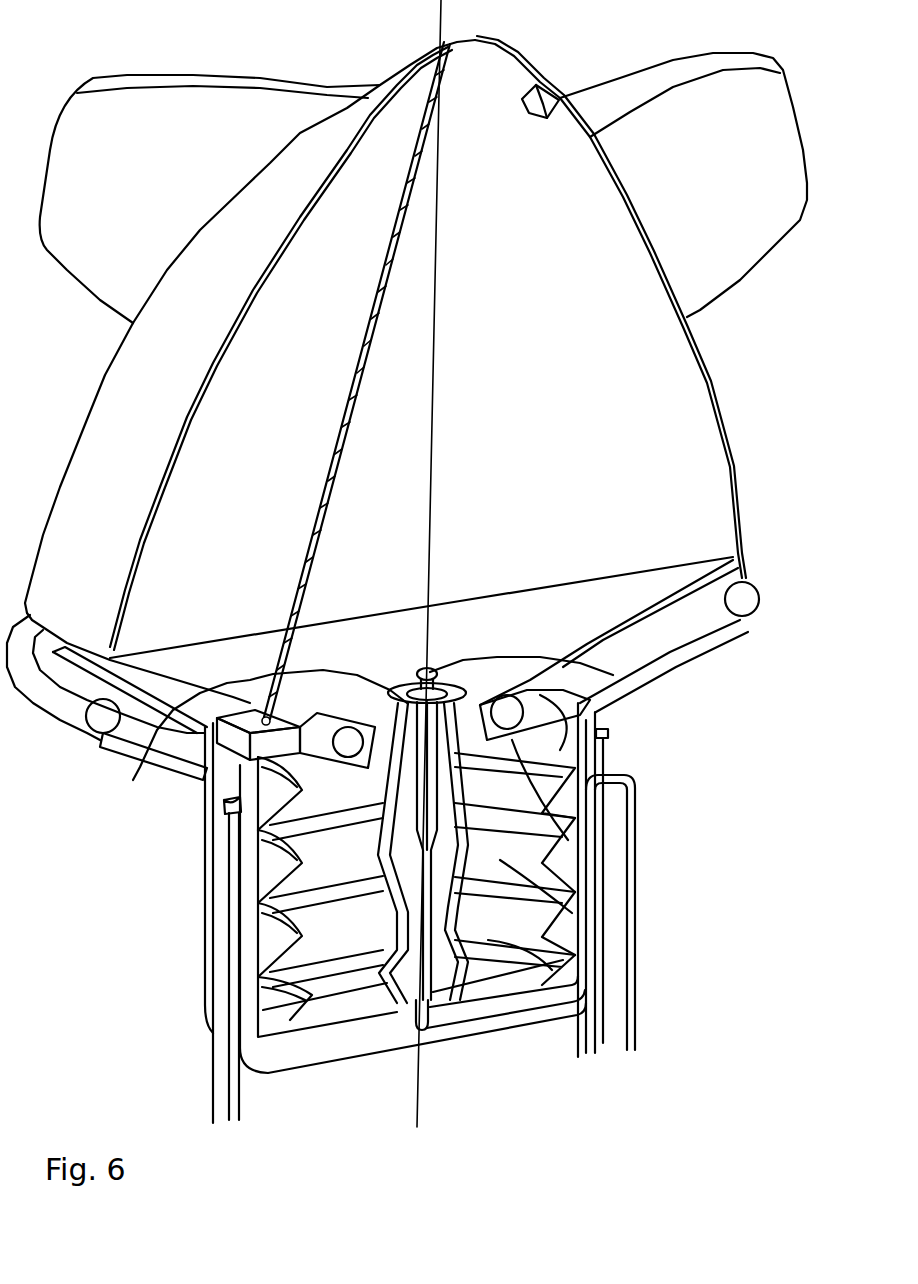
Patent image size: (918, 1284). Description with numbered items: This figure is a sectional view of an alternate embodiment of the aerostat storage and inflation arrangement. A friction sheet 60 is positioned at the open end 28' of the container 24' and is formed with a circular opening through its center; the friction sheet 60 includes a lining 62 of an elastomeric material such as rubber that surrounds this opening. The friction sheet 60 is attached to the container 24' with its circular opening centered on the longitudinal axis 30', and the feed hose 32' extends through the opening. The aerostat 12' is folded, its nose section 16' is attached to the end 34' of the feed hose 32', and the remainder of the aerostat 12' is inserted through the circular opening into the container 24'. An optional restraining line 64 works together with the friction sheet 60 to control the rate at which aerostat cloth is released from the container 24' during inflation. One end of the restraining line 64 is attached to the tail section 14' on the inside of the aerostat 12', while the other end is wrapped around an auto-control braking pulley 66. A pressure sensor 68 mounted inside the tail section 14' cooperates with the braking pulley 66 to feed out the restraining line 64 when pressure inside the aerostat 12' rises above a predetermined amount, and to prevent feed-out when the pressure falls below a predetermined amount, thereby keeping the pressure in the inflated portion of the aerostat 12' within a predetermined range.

The aerostat 12' is at (392, 356).
The tail section 14' is at (210, 165).
The nose section 16' is at (191, 711).
The container 24' is at (173, 923).
The open end 28' is at (614, 838).
The longitudinal axis 30' is at (383, 563).
The feed hose 32' is at (488, 906).
The end 34' is at (435, 718).
The friction sheet 60 is at (525, 745).
The lining 62 is at (508, 715).
The restraining line 64 is at (428, 113).
The auto-control braking pulley 66 is at (233, 737).
The pressure sensor 68 is at (563, 100).